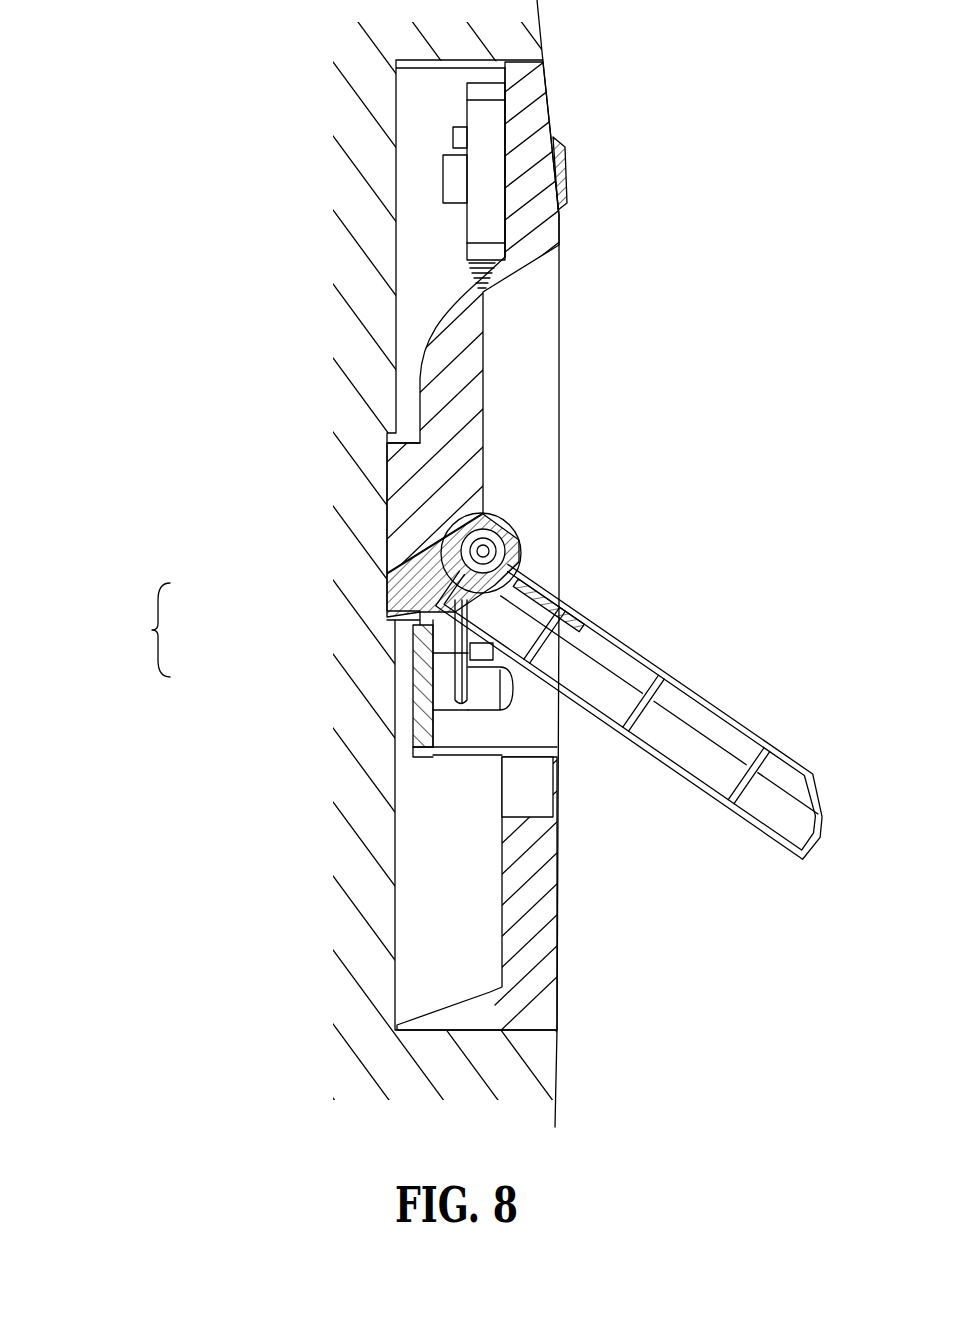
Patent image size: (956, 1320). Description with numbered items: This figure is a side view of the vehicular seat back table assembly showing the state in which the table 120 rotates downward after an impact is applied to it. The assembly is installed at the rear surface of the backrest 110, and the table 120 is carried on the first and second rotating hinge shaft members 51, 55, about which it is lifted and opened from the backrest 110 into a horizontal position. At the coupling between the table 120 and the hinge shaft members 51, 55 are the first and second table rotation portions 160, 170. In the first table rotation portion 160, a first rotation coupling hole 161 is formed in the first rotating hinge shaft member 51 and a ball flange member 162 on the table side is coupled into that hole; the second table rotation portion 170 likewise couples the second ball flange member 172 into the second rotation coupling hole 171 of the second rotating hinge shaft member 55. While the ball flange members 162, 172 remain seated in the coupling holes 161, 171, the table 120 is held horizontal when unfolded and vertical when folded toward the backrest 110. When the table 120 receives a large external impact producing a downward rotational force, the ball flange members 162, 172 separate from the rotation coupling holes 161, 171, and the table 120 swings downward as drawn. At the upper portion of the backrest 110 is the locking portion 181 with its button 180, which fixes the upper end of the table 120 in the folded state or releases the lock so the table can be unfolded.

The backrest 110 is at (430, 380).
The table 120 is at (682, 712).
The button 180 is at (450, 240).
The locking portion 181 is at (565, 175).
The first rotating hinge shaft member 51 is at (580, 519).
The second rotating hinge shaft member 55 is at (518, 540).
The first table rotation portion 160 is at (105, 630).
The second table rotation portion 170 is at (105, 630).
The first rotation coupling hole 161 is at (343, 655).
The second rotation coupling hole 171 is at (455, 625).
The ball flange member 162 is at (345, 565).
The second ball flange member 172 is at (440, 570).